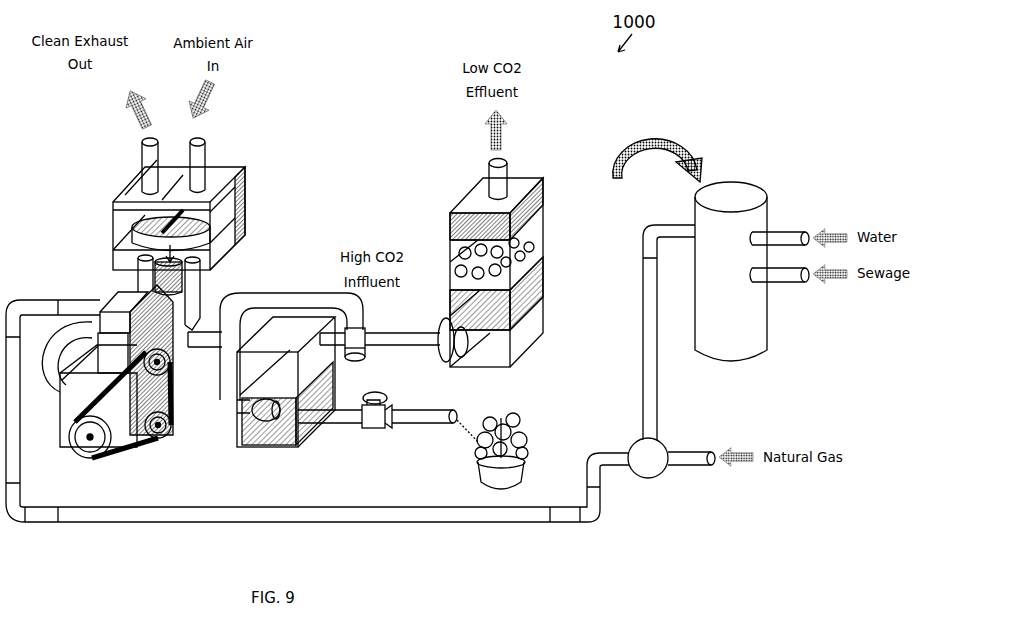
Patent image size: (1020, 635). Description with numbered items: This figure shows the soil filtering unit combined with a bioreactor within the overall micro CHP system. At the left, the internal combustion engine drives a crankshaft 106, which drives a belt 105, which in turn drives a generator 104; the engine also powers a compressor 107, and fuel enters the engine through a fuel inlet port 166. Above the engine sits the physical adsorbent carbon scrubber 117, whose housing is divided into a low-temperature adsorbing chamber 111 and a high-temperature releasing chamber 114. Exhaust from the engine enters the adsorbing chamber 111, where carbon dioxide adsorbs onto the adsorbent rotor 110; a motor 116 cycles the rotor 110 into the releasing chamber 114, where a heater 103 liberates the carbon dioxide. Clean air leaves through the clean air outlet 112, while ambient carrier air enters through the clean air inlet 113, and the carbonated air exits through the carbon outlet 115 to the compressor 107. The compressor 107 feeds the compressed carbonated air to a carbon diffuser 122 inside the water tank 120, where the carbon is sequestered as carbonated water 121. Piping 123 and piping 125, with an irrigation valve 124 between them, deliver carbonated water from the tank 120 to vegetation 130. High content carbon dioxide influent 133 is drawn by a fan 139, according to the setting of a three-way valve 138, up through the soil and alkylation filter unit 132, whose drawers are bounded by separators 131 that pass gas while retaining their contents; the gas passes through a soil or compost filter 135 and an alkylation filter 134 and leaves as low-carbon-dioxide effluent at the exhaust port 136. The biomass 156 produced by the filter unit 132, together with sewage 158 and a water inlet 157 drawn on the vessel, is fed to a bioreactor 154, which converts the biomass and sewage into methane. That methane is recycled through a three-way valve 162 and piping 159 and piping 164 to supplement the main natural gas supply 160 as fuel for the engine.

The heater 103 is at (247, 203).
The generator 104 is at (160, 437).
The belt 105 is at (130, 445).
The crankshaft 106 is at (88, 440).
The compressor 107 is at (177, 350).
The adsorbent rotor 110 is at (115, 232).
The low-temperature adsorbing chamber 111 is at (128, 192).
The clean air outlet 112 is at (142, 155).
The clean air inlet 113 is at (205, 153).
The high-temperature releasing chamber 114 is at (226, 192).
The carbon outlet 115 is at (195, 300).
The motor 116 is at (152, 270).
The physical adsorbent carbon scrubber 117 is at (222, 229).
The water tank 120 is at (235, 425).
The water 121 is at (283, 432).
The carbon diffuser 122 is at (262, 418).
The piping 123 is at (341, 425).
The valve 124 is at (385, 402).
The piping 125 is at (419, 425).
The vegetation 130 is at (528, 405).
The separators 131 is at (450, 228).
The soil and alkylation filter unit 132 is at (545, 312).
The high content CO2 influent 133 is at (388, 330).
The alkylation filter 134 is at (545, 250).
The soil or compost filter 135 is at (545, 205).
The exhaust port 136 is at (507, 170).
The 3-way valve 138 is at (352, 360).
The fan 139 is at (440, 326).
The bioreactor 154 is at (731, 271).
The biomass 156 is at (657, 151).
The water inlet 157 is at (787, 232).
The sewage 158 is at (787, 283).
The piping 159 is at (643, 365).
The main natural gas supply 160 is at (690, 452).
The 3-way valve 162 is at (641, 447).
The piping 164 is at (395, 505).
The fuel inlet port 166 is at (125, 300).